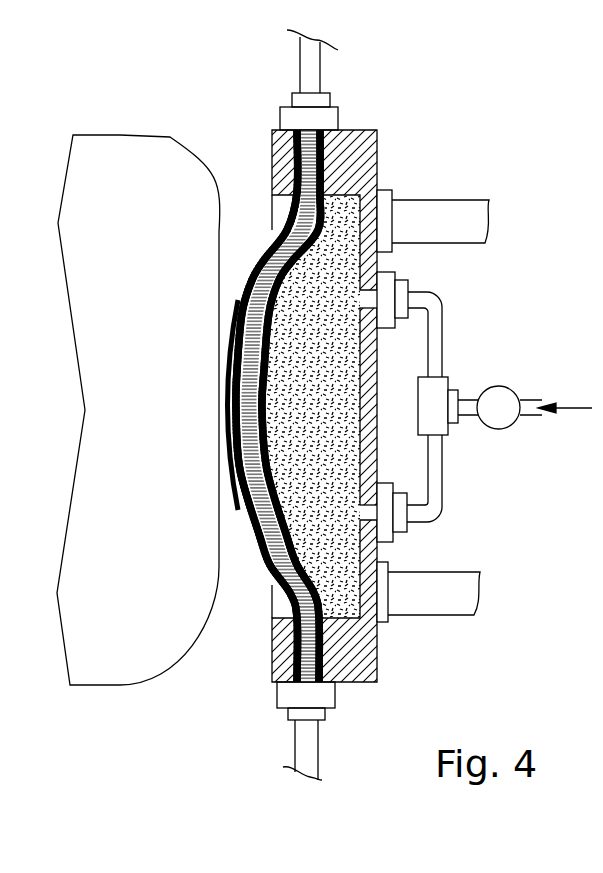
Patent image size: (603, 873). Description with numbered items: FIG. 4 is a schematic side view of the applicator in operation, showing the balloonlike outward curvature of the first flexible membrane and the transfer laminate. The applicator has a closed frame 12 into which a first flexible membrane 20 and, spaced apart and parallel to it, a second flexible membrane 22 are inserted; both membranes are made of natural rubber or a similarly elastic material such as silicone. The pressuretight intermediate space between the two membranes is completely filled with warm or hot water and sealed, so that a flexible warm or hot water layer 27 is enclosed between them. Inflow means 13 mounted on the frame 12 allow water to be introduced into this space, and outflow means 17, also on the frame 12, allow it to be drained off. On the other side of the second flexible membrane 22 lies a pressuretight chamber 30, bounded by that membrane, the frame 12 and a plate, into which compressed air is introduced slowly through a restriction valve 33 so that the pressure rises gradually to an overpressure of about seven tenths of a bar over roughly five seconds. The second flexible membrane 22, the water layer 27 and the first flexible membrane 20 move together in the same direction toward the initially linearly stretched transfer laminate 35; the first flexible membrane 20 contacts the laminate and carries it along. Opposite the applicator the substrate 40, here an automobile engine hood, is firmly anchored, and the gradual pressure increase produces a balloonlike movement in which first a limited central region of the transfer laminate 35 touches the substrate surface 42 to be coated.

The frame 12 is at (367, 140).
The inflow means 13 is at (302, 70).
The outflow means 17 is at (305, 752).
The first flexible membrane 20 is at (245, 318).
The second flexible membrane 22 is at (270, 392).
The flexible warm or hot water layer 27 is at (253, 467).
The pressuretight chamber 30 is at (342, 556).
The restriction valve 33 is at (498, 393).
The transfer laminate 35 is at (237, 300).
The substrate 40 is at (165, 400).
The substrate surface 42 is at (220, 563).